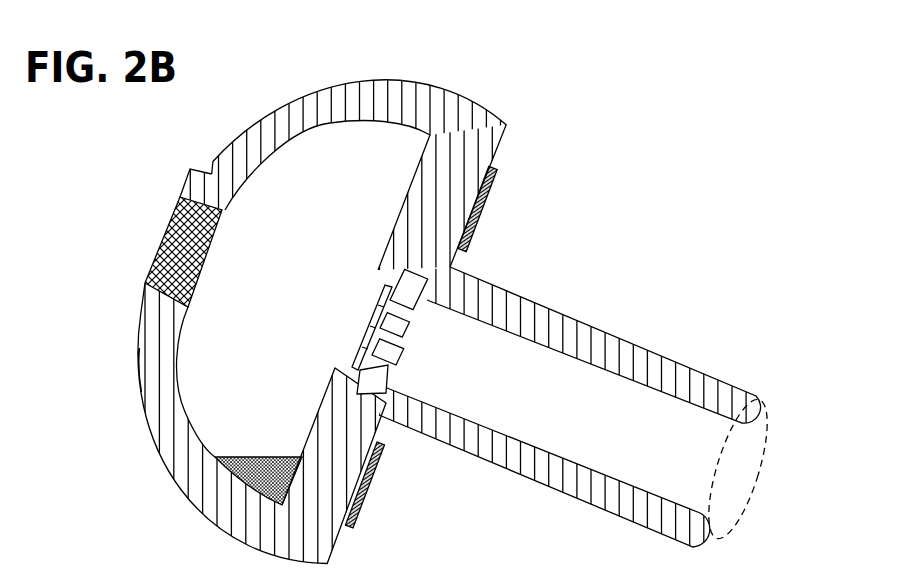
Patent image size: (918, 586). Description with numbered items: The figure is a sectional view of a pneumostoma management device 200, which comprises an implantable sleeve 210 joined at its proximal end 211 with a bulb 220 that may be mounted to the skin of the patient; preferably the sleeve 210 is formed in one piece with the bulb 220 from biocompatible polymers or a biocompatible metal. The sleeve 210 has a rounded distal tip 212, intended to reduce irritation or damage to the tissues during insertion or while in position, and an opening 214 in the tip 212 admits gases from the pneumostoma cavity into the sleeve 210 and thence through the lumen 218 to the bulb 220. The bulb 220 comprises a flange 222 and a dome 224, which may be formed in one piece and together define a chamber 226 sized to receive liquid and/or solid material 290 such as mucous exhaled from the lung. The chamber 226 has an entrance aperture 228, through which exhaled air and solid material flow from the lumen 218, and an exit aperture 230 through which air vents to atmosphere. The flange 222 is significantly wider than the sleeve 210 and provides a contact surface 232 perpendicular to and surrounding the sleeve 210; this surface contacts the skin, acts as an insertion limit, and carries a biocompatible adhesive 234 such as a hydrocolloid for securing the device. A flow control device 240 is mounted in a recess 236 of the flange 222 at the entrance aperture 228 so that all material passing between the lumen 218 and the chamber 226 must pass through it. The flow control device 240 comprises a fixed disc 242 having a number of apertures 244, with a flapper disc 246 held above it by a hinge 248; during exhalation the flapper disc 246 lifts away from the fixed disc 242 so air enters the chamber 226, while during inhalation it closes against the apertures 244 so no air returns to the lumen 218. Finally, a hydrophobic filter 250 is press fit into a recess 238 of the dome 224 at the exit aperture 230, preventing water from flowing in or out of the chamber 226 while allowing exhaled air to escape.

The pneumostoma management device 200 is at (622, 100).
The sleeve 210 is at (589, 266).
The proximal end 211 is at (460, 275).
The distal tip 212 is at (763, 408).
The opening 214 is at (745, 482).
The lumen 218 is at (591, 427).
The bulb 220 is at (495, 96).
The flange 222 is at (358, 464).
The dome 224 is at (235, 152).
The chamber 226 is at (325, 223).
The entrance aperture 228 is at (364, 314).
The exit aperture 230 is at (225, 268).
The contact surface 232 is at (498, 148).
The biocompatible adhesive 234 is at (482, 215).
The recess 236 is at (368, 397).
The recess 238 is at (175, 305).
The flow control device 240 is at (435, 352).
The fixed disc 242 is at (409, 327).
The apertures 244 is at (388, 367).
The flapper disc 246 is at (362, 344).
The hinge 248 is at (393, 284).
The hydrophobic filter 250 is at (168, 250).
The liquid and/or solid material 290 is at (276, 462).